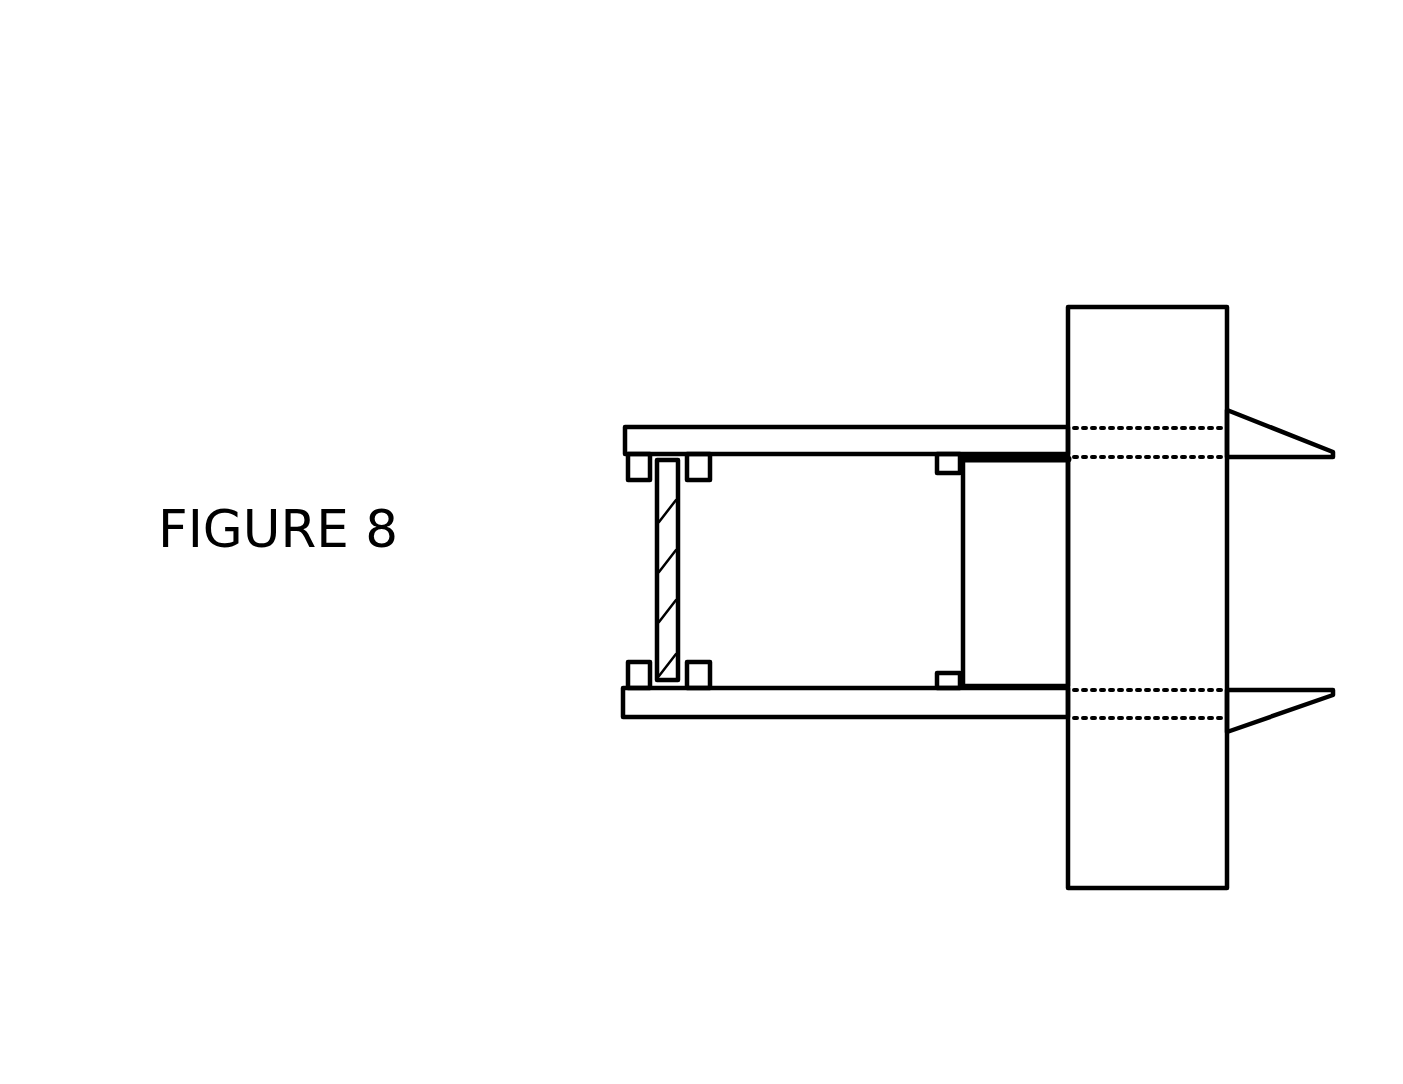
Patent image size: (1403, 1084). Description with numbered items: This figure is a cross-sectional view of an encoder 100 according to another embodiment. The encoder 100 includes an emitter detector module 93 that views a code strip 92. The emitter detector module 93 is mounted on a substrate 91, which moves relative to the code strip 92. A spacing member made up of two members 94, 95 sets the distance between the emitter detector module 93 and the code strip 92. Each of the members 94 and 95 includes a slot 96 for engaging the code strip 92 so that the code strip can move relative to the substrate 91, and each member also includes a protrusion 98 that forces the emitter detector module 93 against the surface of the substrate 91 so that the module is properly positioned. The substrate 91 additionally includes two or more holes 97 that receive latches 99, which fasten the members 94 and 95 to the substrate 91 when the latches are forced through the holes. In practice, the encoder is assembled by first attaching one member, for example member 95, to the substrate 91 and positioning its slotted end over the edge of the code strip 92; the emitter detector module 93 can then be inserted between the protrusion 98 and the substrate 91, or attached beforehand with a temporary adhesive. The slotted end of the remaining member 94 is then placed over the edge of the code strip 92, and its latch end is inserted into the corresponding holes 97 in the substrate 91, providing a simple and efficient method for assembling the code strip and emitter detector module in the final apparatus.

The encoder 100 is at (265, 199).
The substrate 91 is at (1157, 342).
The code strip 92 is at (657, 647).
The emitter detector module 93 is at (1027, 633).
The member 94 is at (940, 442).
The member 95 is at (827, 705).
The slot 96 is at (640, 472).
The holes 97 is at (1153, 447).
The protrusion 98 is at (947, 465).
The latches 99 is at (1285, 443).